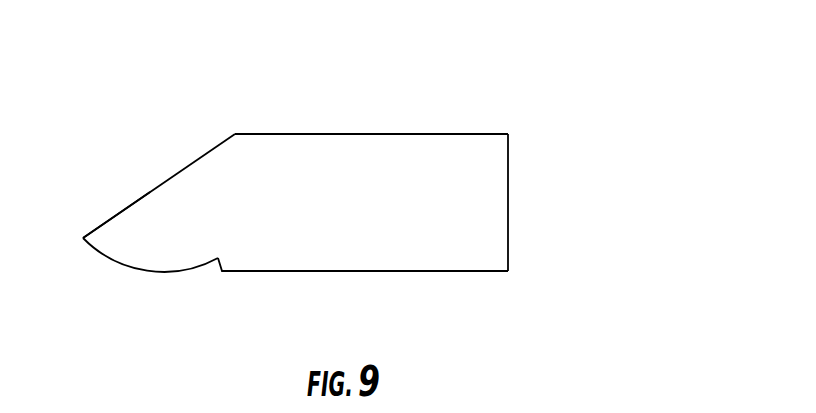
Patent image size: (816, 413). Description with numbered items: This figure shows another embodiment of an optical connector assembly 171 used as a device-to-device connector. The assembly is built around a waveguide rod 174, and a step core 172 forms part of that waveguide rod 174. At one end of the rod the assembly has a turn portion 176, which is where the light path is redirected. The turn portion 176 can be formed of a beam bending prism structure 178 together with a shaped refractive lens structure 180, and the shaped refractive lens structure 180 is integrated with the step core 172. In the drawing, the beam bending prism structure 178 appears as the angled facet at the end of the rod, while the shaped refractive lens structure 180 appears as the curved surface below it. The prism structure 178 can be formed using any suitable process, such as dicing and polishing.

The optical connector assembly 171 is at (292, 183).
The step core 172 is at (362, 127).
The waveguide rod 174 is at (338, 285).
The turn portion 176 is at (107, 194).
The beam bending prism structure 178 is at (193, 192).
The shaped refractive lens structure 180 is at (145, 272).